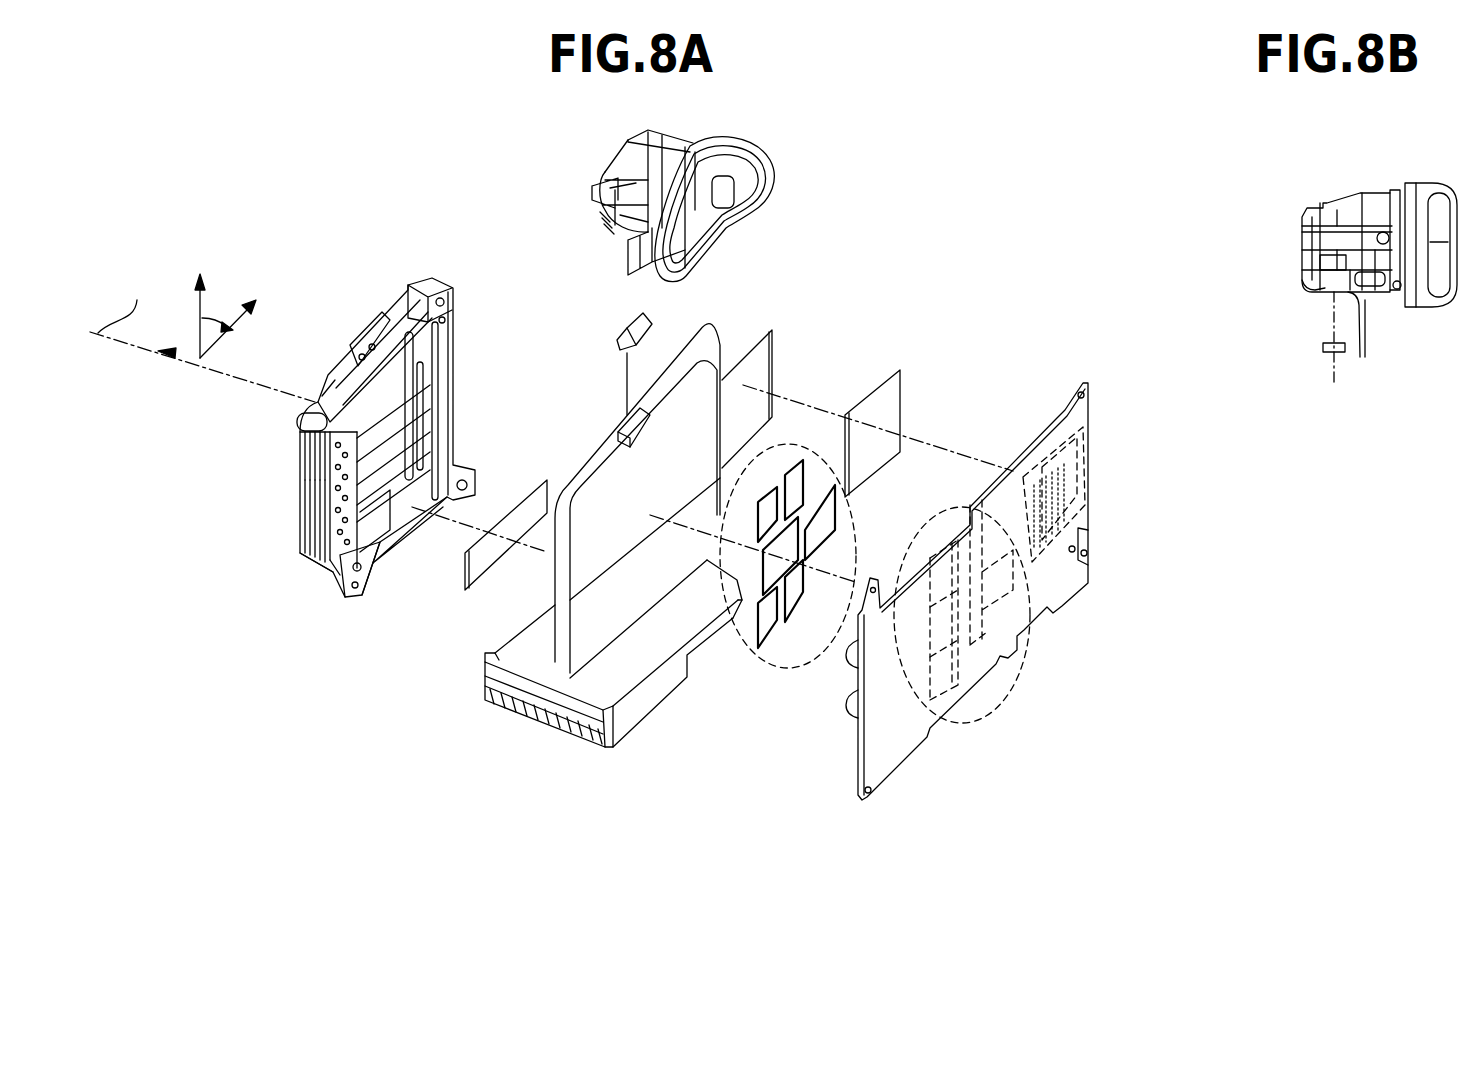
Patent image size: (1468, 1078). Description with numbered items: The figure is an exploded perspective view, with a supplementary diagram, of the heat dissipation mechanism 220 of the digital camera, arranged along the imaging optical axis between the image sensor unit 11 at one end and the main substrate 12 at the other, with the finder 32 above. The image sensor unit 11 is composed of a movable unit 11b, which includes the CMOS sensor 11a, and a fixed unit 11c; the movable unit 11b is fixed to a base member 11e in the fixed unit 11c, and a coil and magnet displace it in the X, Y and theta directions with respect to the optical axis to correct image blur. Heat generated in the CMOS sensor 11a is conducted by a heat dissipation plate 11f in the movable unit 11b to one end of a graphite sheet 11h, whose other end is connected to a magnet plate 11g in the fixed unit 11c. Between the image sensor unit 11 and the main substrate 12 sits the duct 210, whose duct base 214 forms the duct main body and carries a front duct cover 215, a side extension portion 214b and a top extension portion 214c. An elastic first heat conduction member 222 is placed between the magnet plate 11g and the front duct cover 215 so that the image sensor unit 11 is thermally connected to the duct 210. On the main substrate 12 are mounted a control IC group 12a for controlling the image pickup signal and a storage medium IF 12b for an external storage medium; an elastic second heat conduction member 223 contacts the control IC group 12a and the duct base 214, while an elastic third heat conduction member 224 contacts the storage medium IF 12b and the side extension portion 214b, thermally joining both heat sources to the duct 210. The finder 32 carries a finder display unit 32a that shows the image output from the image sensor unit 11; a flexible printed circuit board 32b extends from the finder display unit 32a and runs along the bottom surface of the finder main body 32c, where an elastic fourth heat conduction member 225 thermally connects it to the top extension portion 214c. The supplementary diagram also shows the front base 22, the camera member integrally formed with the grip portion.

In FIG. 8A, the heat dissipation mechanism 220 is at (306, 129).
In FIG. 8A, the duct 210 is at (540, 742).
In FIG. 8A, the duct base 214 is at (615, 597).
In FIG. 8A, the side extension portion 214b is at (762, 365).
In FIG. 8A, the top extension portion 214c is at (632, 418).
In FIG. 8A, the front duct cover 215 is at (553, 582).
In FIG. 8A, the fourth heat conduction member 225 is at (630, 333).
In FIG. 8A, the first heat conduction member 222 is at (466, 572).
In FIG. 8A, the second heat conduction member 223 is at (768, 666).
In FIG. 8A, the third heat conduction member 224 is at (883, 386).
In FIG. 8A, the image sensor unit 11 is at (198, 410).
In FIG. 8A, the CMOS sensor 11a is at (297, 455).
In FIG. 8A, the movable unit 11b is at (297, 535).
In FIG. 8A, the fixed unit 11c is at (297, 475).
In FIG. 8A, the base member 11e is at (378, 360).
In FIG. 8A, the heat dissipation plate 11f is at (378, 428).
In FIG. 8A, the magnet plate 11g is at (370, 576).
In FIG. 8A, the graphite sheet 11h is at (424, 394).
In FIG. 8A, the main substrate 12 is at (1053, 415).
In FIG. 8A, the control integrated circuit (IC) group 12a is at (1015, 682).
In FIG. 8A, the storage medium IF 12b is at (1068, 470).
In FIG. 8A, the finder 32 is at (775, 172).
In FIG. 8B, the finder 32 is at (1369, 188).
In FIG. 8A, the finder display unit 32a is at (598, 173).
In FIG. 8B, the finder display unit 32a is at (1300, 237).
In FIG. 8B, the flexible printed circuit (FPC) board 32b is at (1362, 333).
In FIG. 8B, the main body 32c is at (1310, 280).
In FIG. 8B, the front base 22 is at (1322, 348).